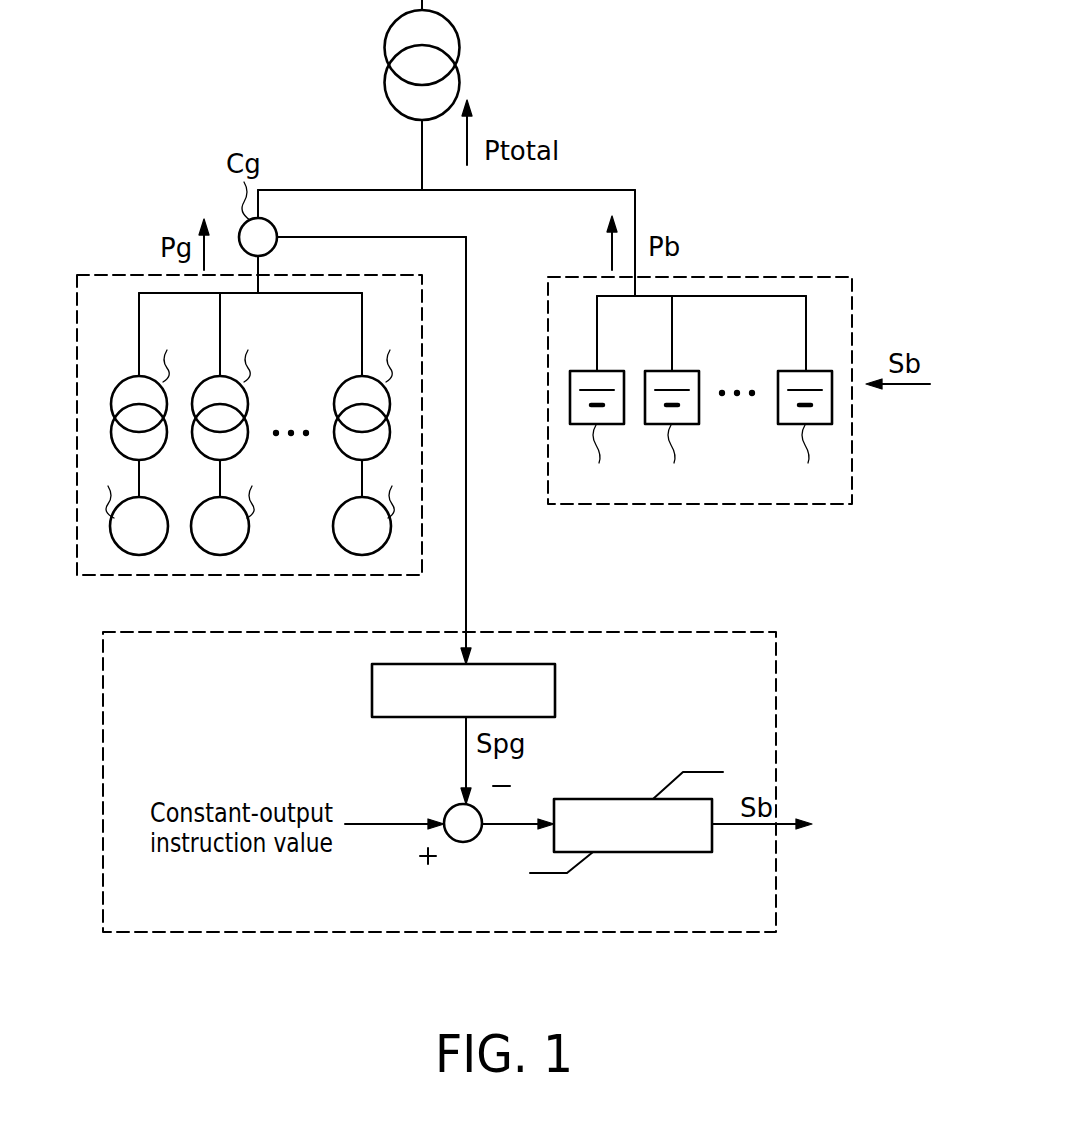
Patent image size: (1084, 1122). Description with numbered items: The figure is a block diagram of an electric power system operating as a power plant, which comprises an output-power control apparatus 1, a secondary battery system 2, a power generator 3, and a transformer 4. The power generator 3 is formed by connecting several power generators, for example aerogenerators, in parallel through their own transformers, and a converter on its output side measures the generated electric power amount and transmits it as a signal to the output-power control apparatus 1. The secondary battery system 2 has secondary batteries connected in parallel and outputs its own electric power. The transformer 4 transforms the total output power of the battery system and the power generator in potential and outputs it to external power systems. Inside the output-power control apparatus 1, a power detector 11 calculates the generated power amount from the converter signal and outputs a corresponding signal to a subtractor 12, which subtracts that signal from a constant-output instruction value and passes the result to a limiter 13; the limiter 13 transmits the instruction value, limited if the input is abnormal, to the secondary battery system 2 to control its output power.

The output-power control apparatus 1 is at (778, 680).
The secondary battery system 2 is at (799, 274).
The power generator 3 is at (116, 275).
The transformer 4 is at (459, 30).
The power detector 11 is at (556, 690).
The subtractor 12 is at (463, 842).
The limiter 13 is at (665, 852).